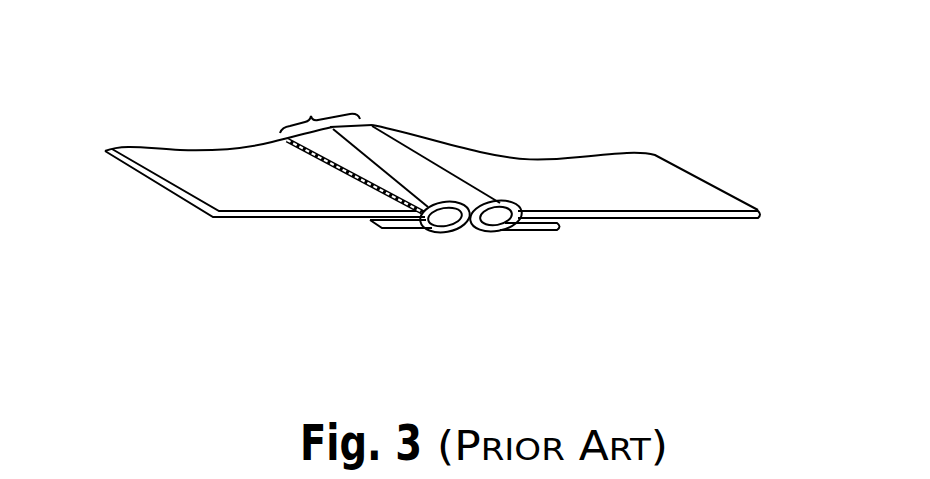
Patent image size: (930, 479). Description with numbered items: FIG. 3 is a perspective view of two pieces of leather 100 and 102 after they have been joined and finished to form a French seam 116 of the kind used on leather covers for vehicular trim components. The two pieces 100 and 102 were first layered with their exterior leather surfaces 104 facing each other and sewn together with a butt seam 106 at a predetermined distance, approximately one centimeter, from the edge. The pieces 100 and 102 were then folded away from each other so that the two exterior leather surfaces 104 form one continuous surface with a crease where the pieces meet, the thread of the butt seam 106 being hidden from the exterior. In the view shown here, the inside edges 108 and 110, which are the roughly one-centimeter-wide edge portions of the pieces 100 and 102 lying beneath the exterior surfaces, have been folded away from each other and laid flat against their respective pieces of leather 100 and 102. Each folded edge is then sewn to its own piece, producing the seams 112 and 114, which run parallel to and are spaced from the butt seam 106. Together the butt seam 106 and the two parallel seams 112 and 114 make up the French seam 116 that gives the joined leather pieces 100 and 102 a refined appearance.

The piece of leather 100 is at (432, 173).
The piece of leather 102 is at (607, 176).
The exterior leather surface 104 is at (241, 160).
The butt seam 106 is at (422, 183).
The inside edge 108 is at (400, 231).
The inside edge 110 is at (540, 228).
The seam 112 is at (296, 153).
The seam 114 is at (483, 233).
The French seam 116 is at (320, 110).